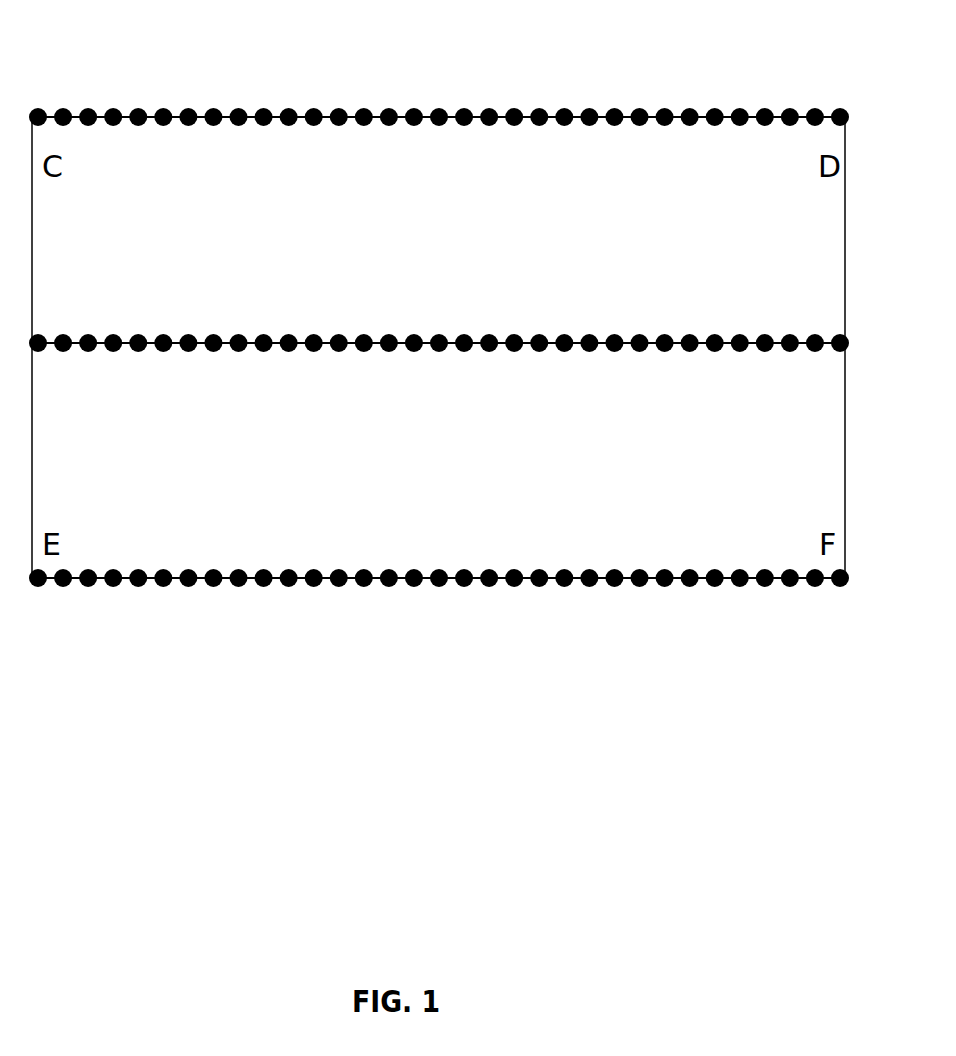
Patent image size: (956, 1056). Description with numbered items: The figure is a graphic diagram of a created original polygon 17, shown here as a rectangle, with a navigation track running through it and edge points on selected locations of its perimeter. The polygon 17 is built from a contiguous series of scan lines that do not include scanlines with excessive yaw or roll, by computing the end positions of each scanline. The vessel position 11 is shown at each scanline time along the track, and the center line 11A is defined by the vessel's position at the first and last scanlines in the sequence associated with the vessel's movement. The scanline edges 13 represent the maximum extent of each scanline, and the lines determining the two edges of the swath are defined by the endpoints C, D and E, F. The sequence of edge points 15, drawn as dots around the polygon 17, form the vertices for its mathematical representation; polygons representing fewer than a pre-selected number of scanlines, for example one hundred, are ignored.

The vessel position 11 is at (145, 352).
The center line 11A is at (233, 333).
The scanline edges 13 is at (805, 347).
The edge points 15 is at (440, 115).
The polygon 17 is at (116, 91).